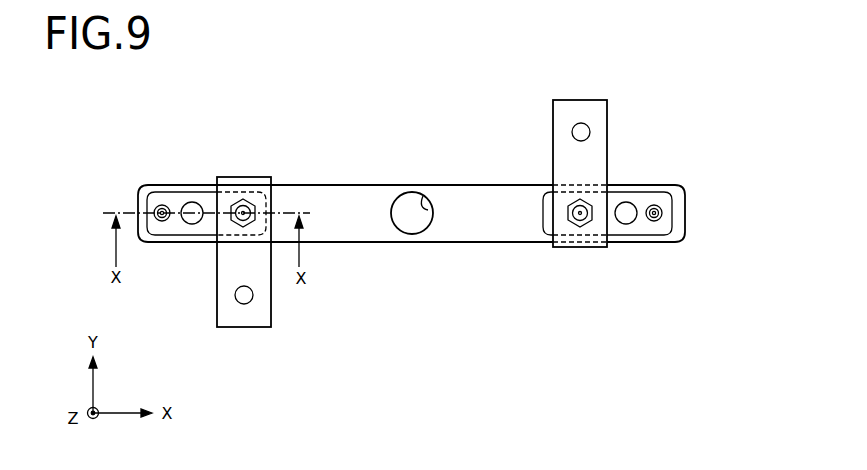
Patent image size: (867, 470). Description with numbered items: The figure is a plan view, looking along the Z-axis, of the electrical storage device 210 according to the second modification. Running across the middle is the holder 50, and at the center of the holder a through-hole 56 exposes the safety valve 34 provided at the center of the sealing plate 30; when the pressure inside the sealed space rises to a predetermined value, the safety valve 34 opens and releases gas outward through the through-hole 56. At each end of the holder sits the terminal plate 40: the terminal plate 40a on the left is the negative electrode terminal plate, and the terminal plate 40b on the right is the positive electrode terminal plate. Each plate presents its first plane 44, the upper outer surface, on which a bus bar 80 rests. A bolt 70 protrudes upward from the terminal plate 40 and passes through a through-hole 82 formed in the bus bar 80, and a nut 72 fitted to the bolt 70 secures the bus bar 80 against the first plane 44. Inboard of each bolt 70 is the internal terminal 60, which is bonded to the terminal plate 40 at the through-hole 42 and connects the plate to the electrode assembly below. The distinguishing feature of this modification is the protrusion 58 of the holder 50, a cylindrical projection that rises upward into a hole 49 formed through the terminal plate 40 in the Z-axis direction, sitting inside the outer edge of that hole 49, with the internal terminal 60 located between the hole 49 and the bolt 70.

The electrical storage device 210 is at (708, 128).
The holder 50 is at (494, 207).
The terminal plate 40 is at (399, 210).
The terminal plate 40a is at (150, 205).
The terminal plate 40b is at (648, 197).
The first plane 44 is at (168, 198).
The hole 49 is at (163, 221).
The protrusion 58 is at (160, 222).
The internal terminal 60 is at (193, 202).
The through-hole 42 is at (193, 224).
The bolt 70 is at (251, 201).
The nut 72 is at (238, 205).
The through-hole 82 is at (243, 209).
The bus bar 80 is at (260, 312).
The safety valve 34 is at (403, 213).
The sealing plate 30 is at (403, 174).
The through-hole 56 is at (423, 196).